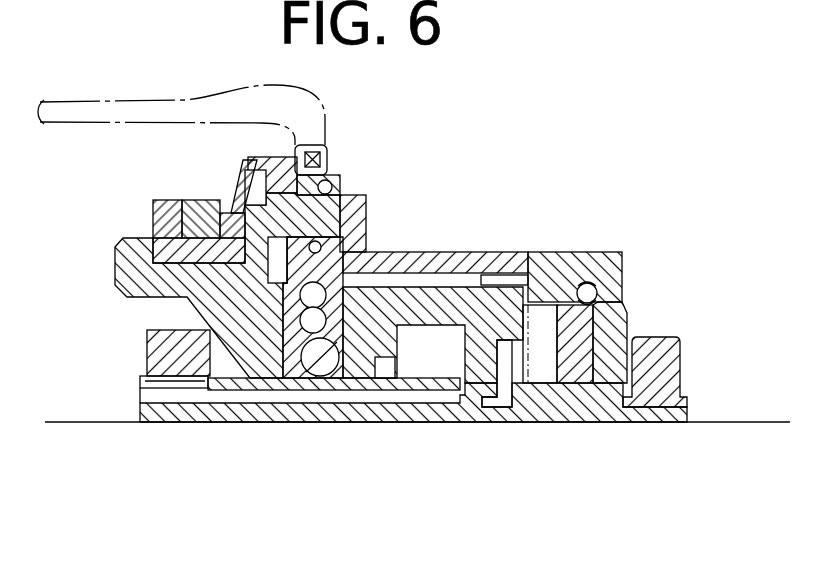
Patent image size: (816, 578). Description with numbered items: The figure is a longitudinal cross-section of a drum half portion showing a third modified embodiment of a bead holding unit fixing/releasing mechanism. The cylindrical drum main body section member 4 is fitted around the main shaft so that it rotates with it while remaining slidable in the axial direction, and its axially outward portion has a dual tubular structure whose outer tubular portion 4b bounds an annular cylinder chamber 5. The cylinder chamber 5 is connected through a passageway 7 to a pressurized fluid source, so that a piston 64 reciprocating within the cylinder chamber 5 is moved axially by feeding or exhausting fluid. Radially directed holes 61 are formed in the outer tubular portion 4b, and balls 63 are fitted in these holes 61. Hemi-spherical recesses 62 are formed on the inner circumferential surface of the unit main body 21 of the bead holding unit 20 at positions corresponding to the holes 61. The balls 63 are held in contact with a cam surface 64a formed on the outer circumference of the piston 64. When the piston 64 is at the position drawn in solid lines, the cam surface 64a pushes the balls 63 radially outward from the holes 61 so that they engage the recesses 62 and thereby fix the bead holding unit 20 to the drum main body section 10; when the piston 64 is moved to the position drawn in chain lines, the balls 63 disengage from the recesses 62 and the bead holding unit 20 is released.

The drum main body section 10 is at (298, 436).
The bead holding unit 20 is at (413, 218).
The unit main body 21 is at (508, 251).
The drum main body section member 4 is at (441, 422).
The outer tubular portion 4b is at (622, 295).
The cylinder chamber 5 is at (543, 378).
The passageway 7 is at (500, 406).
The holes 61 is at (599, 289).
The hemi-spherical recesses 62 is at (591, 296).
The balls 63 is at (581, 285).
The piston 64 is at (580, 370).
The cam surface 64a is at (627, 307).